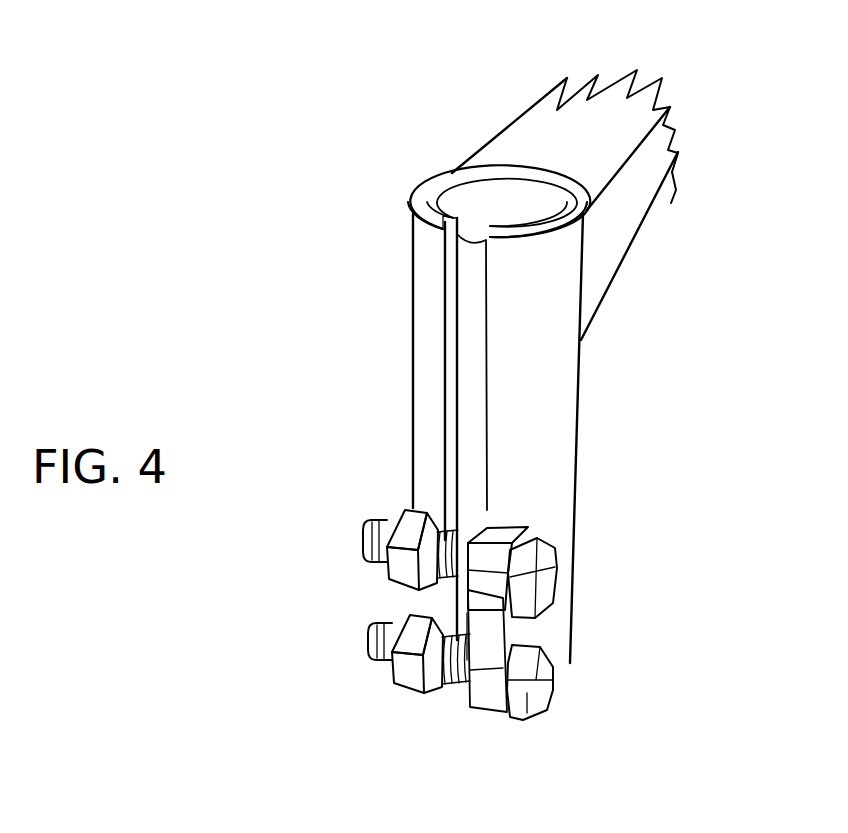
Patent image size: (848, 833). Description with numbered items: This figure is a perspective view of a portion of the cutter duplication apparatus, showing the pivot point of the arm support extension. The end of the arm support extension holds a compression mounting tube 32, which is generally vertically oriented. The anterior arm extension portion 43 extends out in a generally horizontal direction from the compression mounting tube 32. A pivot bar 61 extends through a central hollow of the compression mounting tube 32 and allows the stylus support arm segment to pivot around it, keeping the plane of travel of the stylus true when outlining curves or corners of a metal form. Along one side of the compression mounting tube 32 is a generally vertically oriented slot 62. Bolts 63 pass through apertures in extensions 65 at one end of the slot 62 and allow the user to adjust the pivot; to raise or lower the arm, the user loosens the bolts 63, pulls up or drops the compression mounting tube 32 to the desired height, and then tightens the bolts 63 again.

The compression mounting tube 32 is at (550, 443).
The anterior arm extension portion 43 is at (608, 230).
The pivot bar 61 is at (482, 202).
The slot 62 is at (472, 382).
The bolts 63 is at (547, 570).
The extensions 65 is at (400, 615).